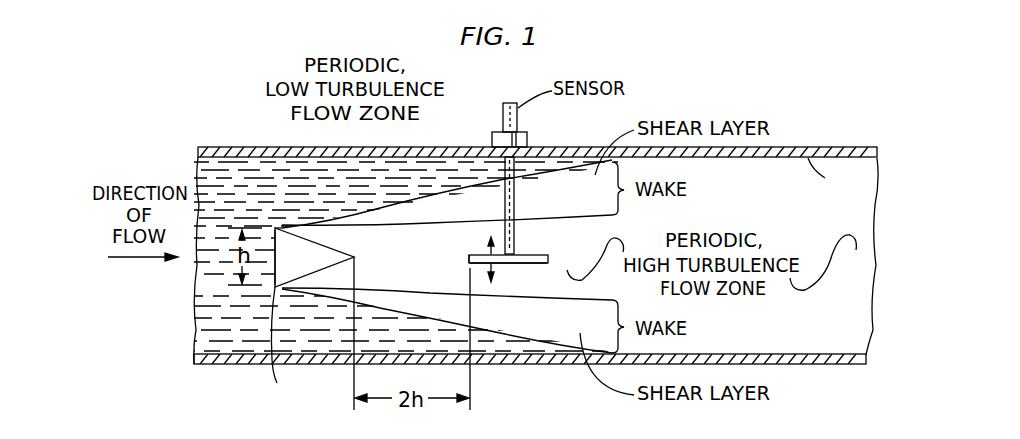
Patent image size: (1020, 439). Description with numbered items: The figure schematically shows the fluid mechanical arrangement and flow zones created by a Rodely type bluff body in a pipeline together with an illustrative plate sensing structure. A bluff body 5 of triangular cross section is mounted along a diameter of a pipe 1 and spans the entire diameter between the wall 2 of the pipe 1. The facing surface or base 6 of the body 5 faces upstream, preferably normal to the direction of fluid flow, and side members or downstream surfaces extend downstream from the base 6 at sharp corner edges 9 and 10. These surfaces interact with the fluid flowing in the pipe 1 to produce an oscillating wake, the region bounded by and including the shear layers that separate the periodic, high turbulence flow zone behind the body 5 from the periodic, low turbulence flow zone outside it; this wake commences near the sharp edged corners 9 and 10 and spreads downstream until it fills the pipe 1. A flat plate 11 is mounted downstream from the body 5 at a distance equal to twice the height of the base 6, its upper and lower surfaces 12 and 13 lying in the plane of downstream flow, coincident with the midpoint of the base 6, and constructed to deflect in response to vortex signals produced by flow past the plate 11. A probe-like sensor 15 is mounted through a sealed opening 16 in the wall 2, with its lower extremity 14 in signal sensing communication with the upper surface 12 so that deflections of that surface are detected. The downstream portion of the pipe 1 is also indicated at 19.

The flow measuring system / conduit with low turbulence flow zone 1 is at (426, 146).
The conduit (pipe) wall 2 is at (237, 150).
The bluff body (triangular obstruction) 5 is at (320, 256).
The upstream face of bluff body 6 is at (272, 233).
The upper edge of bluff body 9 is at (280, 234).
The lower edge of bluff body 10 is at (289, 344).
The upstream end of sensing plate 11 is at (464, 261).
The sensing plate (vane) 12 is at (540, 253).
The lower surface of sensing plate 13 is at (523, 265).
The plate displacement (oscillation) direction 14 is at (505, 253).
The sensor mounting / base 15 is at (528, 136).
The support rod 16 is at (502, 166).
The downstream conduit section 19 is at (830, 174).